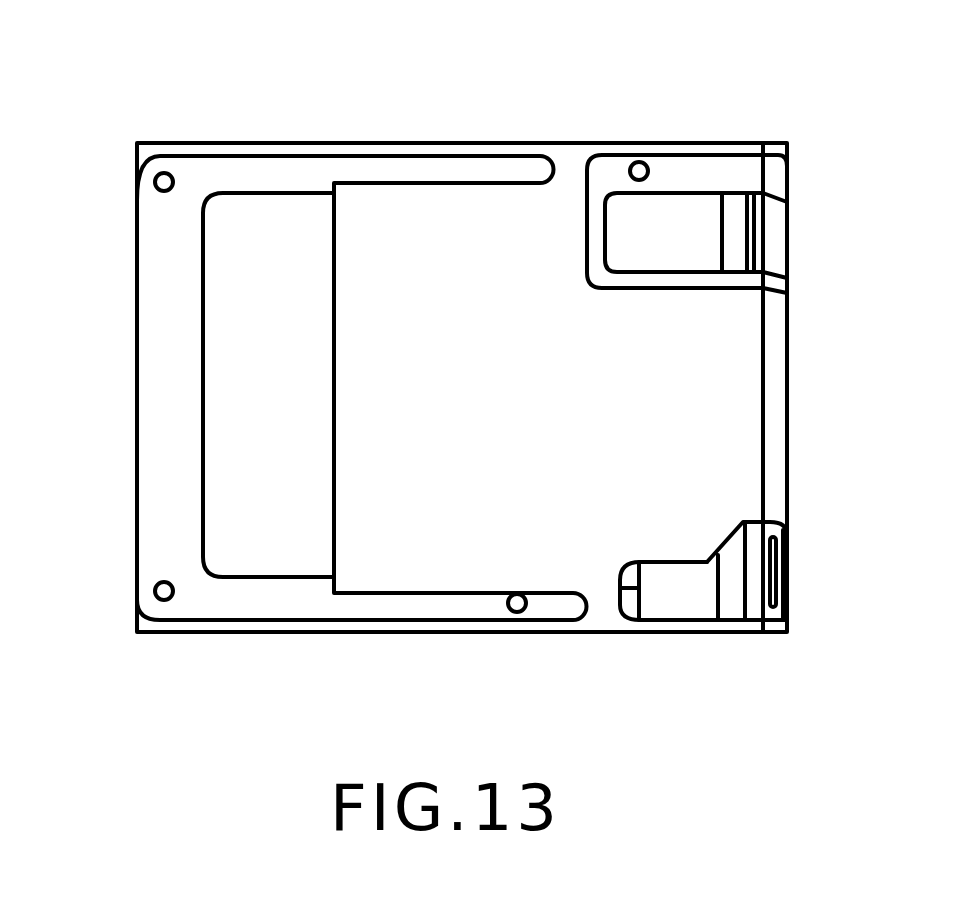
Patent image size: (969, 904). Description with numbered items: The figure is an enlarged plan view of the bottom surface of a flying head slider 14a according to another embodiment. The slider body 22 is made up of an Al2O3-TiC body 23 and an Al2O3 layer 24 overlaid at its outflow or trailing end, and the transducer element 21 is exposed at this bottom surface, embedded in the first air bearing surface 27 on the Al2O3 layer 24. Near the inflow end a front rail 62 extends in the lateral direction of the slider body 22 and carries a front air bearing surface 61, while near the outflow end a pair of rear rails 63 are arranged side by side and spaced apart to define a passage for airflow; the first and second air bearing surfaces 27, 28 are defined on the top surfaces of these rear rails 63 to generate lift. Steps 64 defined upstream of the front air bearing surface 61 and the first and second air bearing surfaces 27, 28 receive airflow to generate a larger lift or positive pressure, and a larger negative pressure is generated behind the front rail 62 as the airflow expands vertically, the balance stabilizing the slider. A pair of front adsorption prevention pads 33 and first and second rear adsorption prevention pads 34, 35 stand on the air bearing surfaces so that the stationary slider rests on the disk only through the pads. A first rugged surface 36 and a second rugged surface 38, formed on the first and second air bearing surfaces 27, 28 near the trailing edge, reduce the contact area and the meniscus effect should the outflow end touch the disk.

The flying head slider 14a is at (283, 125).
The transducer element 21 is at (783, 568).
The slider body 22 is at (798, 58).
The Al2O3-TiC body 23 is at (708, 143).
The Al2O3 layer 24 is at (787, 143).
The first air bearing surface 27 is at (653, 570).
The second air bearing surface 28 is at (648, 250).
The front adsorption prevention pads 33 is at (156, 186).
The first rear adsorption prevention pad 34 is at (517, 612).
The second rear adsorption prevention pad 35 is at (630, 162).
The first rugged surface 36 is at (724, 531).
The second rugged surface 38 is at (737, 272).
The front air bearing surface 61 is at (334, 366).
The front rail 62 is at (135, 367).
The rear rails 63 is at (582, 268).
The steps 64 is at (205, 262).